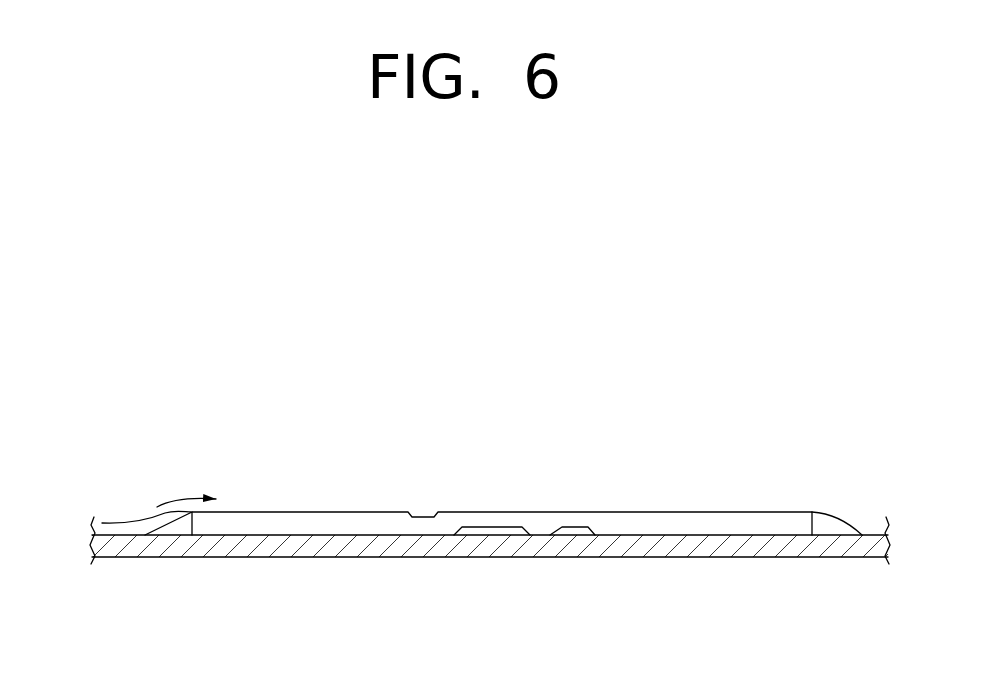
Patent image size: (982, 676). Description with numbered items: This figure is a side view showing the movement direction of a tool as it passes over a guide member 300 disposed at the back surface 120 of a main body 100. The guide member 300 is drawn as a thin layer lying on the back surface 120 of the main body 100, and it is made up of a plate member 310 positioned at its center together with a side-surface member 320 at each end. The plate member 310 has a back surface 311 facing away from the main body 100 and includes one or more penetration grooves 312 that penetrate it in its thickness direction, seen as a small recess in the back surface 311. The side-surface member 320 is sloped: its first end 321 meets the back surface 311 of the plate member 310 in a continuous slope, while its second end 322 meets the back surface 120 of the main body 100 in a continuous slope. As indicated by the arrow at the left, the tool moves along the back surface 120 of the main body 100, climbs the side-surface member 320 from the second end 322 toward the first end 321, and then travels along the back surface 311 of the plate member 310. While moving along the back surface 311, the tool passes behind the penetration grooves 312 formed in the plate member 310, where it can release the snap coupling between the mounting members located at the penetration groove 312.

The main body 100 is at (92, 545).
The back surface of main body 120 is at (871, 531).
The guide member 300 is at (655, 478).
The plate member 310 is at (755, 536).
The back surface of plate member 311 is at (322, 511).
The penetration groove 312 is at (428, 511).
The side-surface member 320 is at (178, 536).
The first end of side-surface member 321 is at (197, 517).
The second end of side-surface member 322 is at (146, 539).